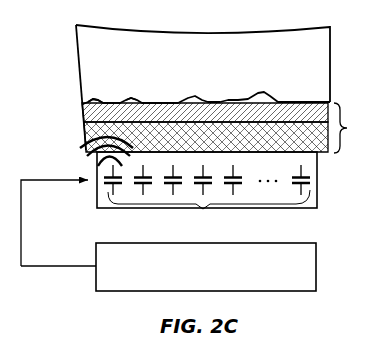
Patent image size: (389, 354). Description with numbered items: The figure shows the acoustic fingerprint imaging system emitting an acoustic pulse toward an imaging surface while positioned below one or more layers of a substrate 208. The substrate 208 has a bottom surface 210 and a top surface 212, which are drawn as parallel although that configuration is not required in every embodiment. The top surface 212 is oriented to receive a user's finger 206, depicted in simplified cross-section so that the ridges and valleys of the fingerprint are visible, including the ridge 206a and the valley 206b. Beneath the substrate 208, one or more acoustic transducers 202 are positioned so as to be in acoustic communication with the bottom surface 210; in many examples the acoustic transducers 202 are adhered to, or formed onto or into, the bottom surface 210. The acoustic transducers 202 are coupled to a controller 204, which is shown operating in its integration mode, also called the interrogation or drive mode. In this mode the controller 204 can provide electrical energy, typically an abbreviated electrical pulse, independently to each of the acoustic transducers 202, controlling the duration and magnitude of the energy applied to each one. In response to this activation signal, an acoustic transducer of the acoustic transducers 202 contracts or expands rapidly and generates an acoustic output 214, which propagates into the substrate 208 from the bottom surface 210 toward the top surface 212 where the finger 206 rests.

The user's finger 206 is at (77, 42).
The ridge 206a is at (105, 101).
The valley 206b is at (133, 97).
The top surface 212 is at (92, 108).
The acoustic output 214 is at (100, 135).
The substrate 208 is at (355, 128).
The bottom surface 210 is at (87, 156).
The acoustic transducers 202 is at (207, 192).
The controller 204 is at (96, 282).